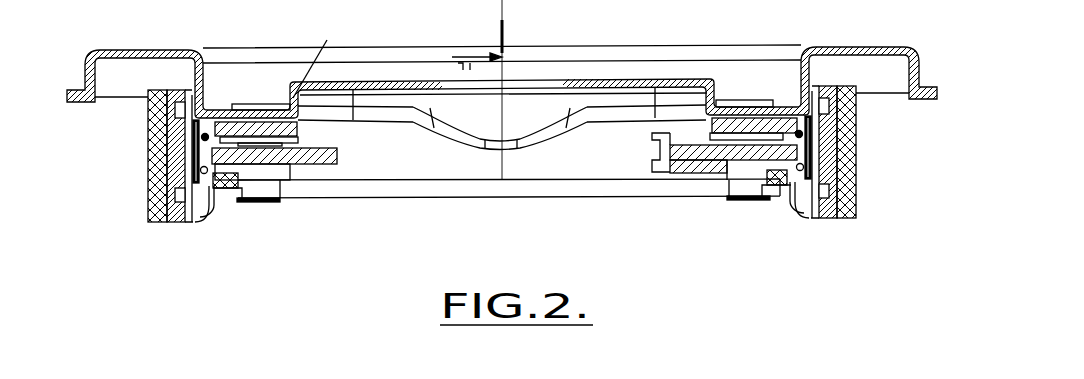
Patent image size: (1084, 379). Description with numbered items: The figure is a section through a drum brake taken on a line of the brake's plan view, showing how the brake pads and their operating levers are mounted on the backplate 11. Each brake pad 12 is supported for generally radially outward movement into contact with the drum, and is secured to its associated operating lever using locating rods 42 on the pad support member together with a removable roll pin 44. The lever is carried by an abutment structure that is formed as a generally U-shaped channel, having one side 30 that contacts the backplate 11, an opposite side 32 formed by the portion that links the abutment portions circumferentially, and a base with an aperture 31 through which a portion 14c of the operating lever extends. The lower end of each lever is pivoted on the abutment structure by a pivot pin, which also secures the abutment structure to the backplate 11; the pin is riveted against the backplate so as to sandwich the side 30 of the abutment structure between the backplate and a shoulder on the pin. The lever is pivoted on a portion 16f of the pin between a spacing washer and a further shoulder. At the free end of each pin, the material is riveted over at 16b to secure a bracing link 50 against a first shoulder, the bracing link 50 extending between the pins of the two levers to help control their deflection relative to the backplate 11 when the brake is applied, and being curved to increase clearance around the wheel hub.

The backplate 11 is at (393, 82).
The brake pad 12 is at (160, 149).
The portion of operating lever 14c is at (210, 152).
The riveted-over end of pin 16b is at (273, 204).
The portion of pin 16f is at (750, 199).
The side of abutment structure 30 is at (260, 128).
The aperture 31 is at (195, 231).
The opposite side of channel structure 32 is at (220, 196).
The locating rod 42 is at (209, 143).
The roll pin 44 is at (193, 135).
The bracing link 50 is at (548, 187).